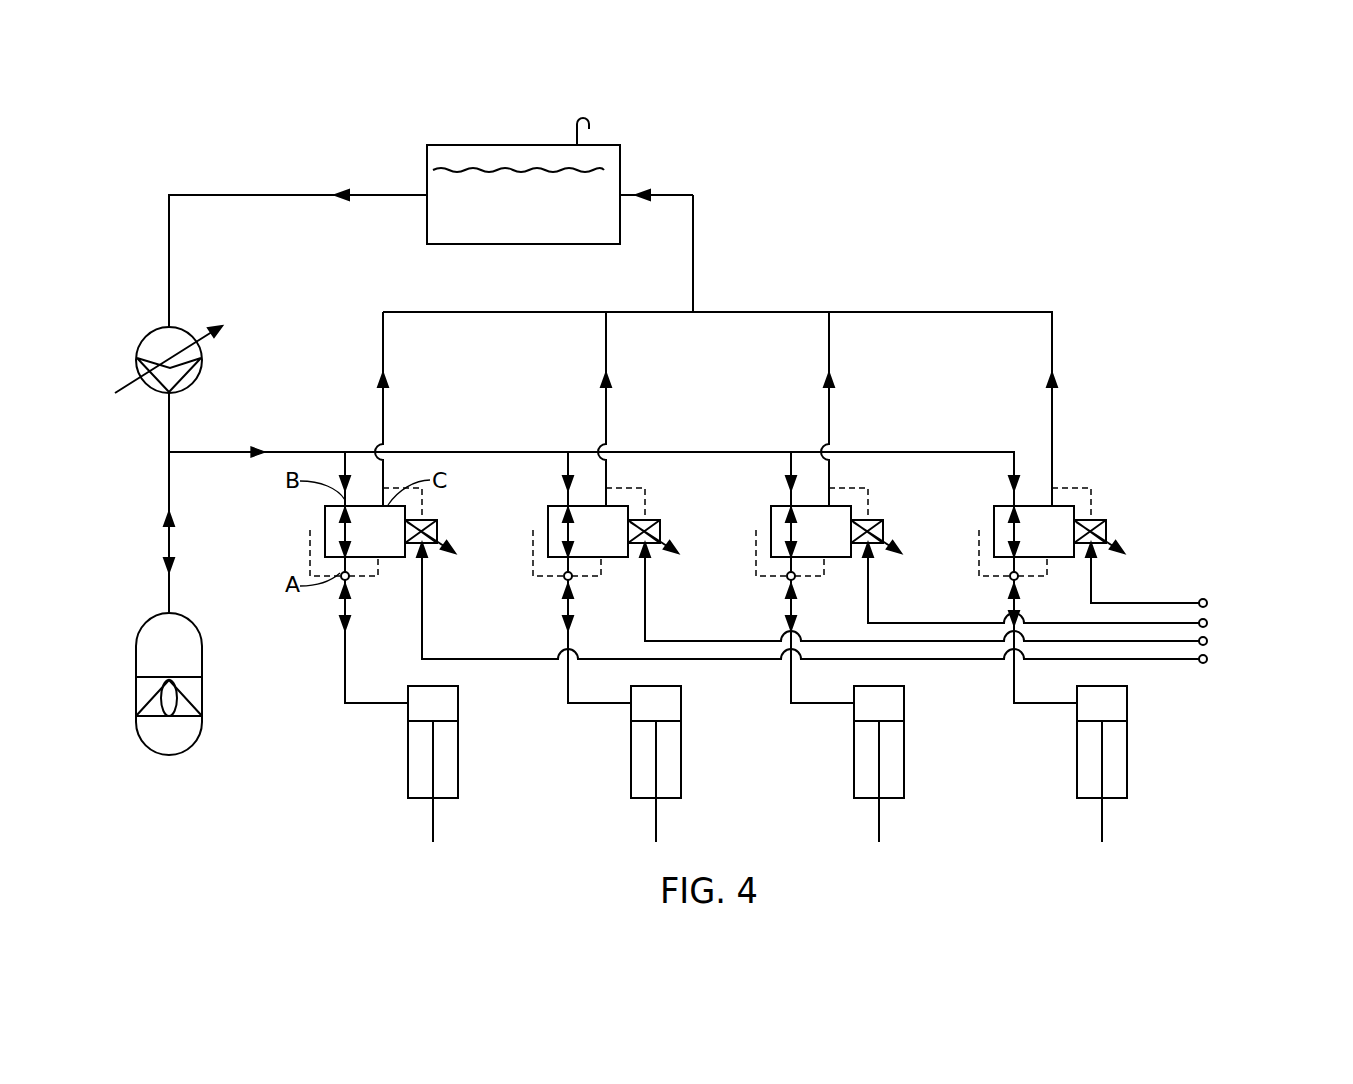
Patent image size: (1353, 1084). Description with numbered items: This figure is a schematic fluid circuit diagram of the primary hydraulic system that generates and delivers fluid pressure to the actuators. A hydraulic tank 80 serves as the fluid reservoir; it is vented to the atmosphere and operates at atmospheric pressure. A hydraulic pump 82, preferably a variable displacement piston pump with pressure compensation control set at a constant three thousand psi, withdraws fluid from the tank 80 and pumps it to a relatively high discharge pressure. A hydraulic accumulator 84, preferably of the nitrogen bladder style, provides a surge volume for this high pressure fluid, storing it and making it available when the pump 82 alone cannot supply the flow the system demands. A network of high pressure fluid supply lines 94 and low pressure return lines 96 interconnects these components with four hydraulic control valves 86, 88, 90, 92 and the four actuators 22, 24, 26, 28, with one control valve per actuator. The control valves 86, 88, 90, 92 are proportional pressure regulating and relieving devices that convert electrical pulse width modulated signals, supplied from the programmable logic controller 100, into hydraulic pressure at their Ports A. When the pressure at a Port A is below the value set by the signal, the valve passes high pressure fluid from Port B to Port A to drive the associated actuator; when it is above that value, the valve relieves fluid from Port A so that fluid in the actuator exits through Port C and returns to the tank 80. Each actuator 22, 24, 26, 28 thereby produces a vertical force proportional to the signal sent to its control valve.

The hydraulic tank 80 is at (610, 160).
The hydraulic pump 82 is at (155, 344).
The hydraulic accumulator 84 is at (153, 658).
The hydraulic control valve 86 is at (1059, 507).
The hydraulic control valve 88 is at (836, 507).
The hydraulic control valve 90 is at (613, 507).
The hydraulic control valve 92 is at (388, 530).
The high pressure fluid supply lines 94 is at (714, 452).
The low pressure return lines 96 is at (740, 312).
The programmable logic controller 100 is at (868, 608).
The hydraulic actuator 22 is at (1062, 764).
The hydraulic actuator 24 is at (840, 764).
The hydraulic actuator 26 is at (616, 764).
The hydraulic actuator 28 is at (418, 772).